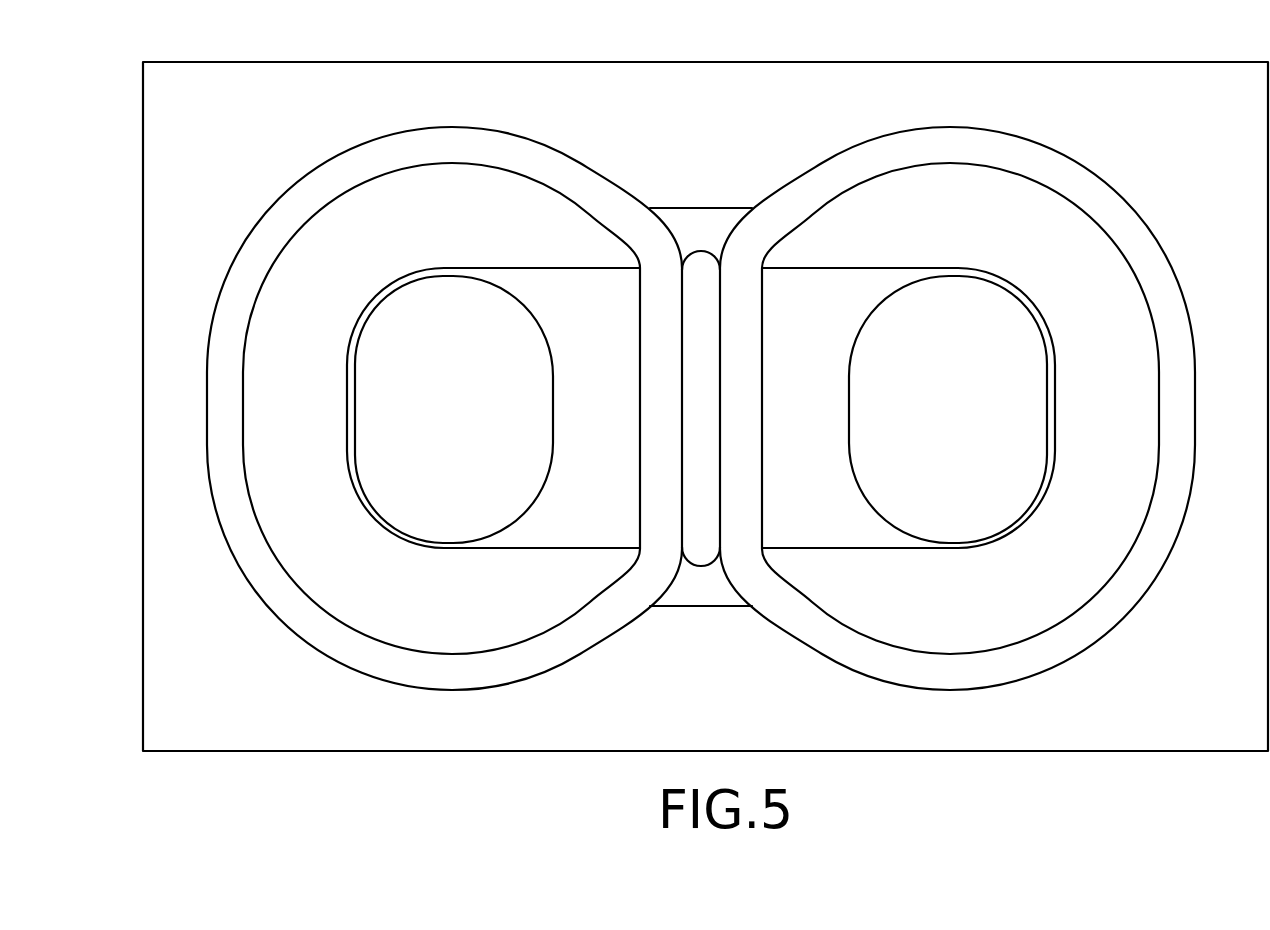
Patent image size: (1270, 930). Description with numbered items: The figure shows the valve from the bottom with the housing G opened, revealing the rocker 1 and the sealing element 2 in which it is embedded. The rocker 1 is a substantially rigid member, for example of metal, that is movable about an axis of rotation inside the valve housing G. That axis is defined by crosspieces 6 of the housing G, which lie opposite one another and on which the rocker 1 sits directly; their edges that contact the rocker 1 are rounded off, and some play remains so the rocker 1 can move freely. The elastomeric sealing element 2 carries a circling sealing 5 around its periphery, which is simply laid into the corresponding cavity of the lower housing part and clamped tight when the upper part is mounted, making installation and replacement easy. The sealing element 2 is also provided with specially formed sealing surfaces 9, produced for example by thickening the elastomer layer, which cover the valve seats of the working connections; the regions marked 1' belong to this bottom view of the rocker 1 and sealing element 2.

The rocker 1 is at (701, 378).
The opening 1' is at (701, 372).
The elastomeric sealing element 2 is at (953, 203).
The circling sealing 5 is at (542, 652).
The crosspiece 6 is at (710, 273).
The sealing surfaces 9 is at (422, 482).
The valve housing G is at (1173, 703).